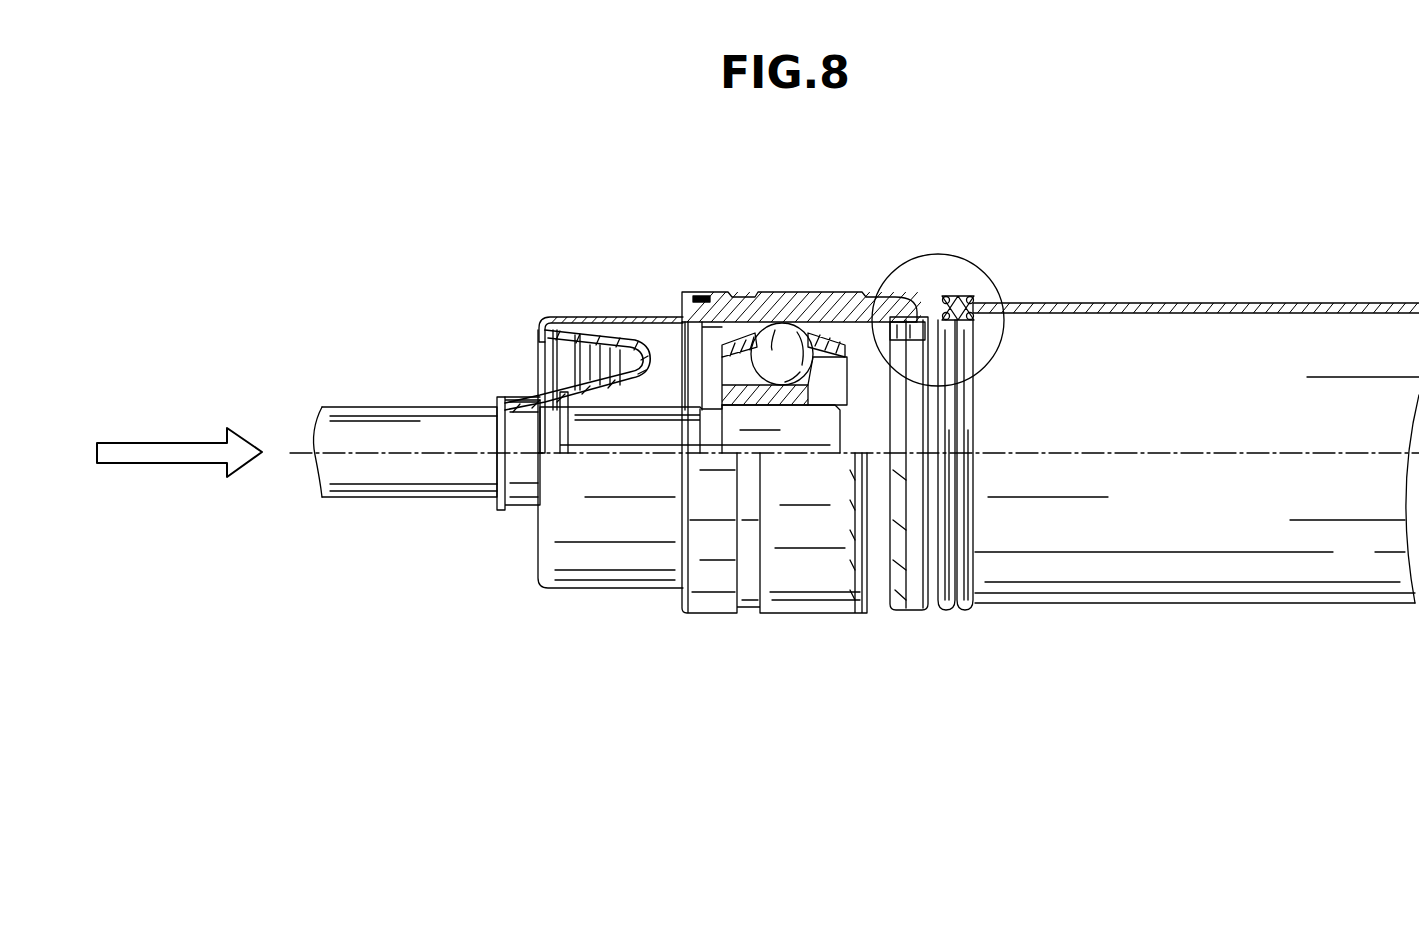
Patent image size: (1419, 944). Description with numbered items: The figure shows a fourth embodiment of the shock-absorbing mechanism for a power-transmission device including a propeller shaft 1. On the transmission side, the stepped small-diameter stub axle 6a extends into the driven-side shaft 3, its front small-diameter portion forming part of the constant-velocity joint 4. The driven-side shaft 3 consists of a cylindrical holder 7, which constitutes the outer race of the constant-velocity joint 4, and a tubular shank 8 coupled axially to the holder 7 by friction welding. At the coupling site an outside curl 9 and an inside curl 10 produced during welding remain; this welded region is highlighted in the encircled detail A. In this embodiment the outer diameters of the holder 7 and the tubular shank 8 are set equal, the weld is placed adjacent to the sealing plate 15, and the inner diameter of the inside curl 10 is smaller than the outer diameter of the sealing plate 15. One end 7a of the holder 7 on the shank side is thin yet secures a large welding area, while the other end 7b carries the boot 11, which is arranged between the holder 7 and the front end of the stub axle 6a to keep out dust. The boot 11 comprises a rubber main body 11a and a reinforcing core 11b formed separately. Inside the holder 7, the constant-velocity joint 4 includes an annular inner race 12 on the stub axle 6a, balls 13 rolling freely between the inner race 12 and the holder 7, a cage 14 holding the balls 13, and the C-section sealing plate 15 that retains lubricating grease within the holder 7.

The propeller shaft 1 is at (423, 368).
The driven-side shaft 3 is at (1199, 266).
The constant-velocity joint 4 is at (801, 308).
The stub axle 6a is at (432, 487).
The holder 7 is at (828, 293).
The one end of holder 7a is at (922, 322).
The another end of holder 7b is at (690, 292).
The tubular shank 8 is at (1118, 305).
The outside curl 9 is at (967, 298).
The inside curl 10 is at (968, 325).
The boot 11 is at (579, 288).
The rubber main body 11a is at (535, 382).
The reinforcing core 11b is at (626, 318).
The inner race 12 is at (752, 400).
The balls 13 is at (793, 365).
The cage 14 is at (719, 345).
The sealing plate 15 is at (940, 330).
The detail region A is at (1004, 274).